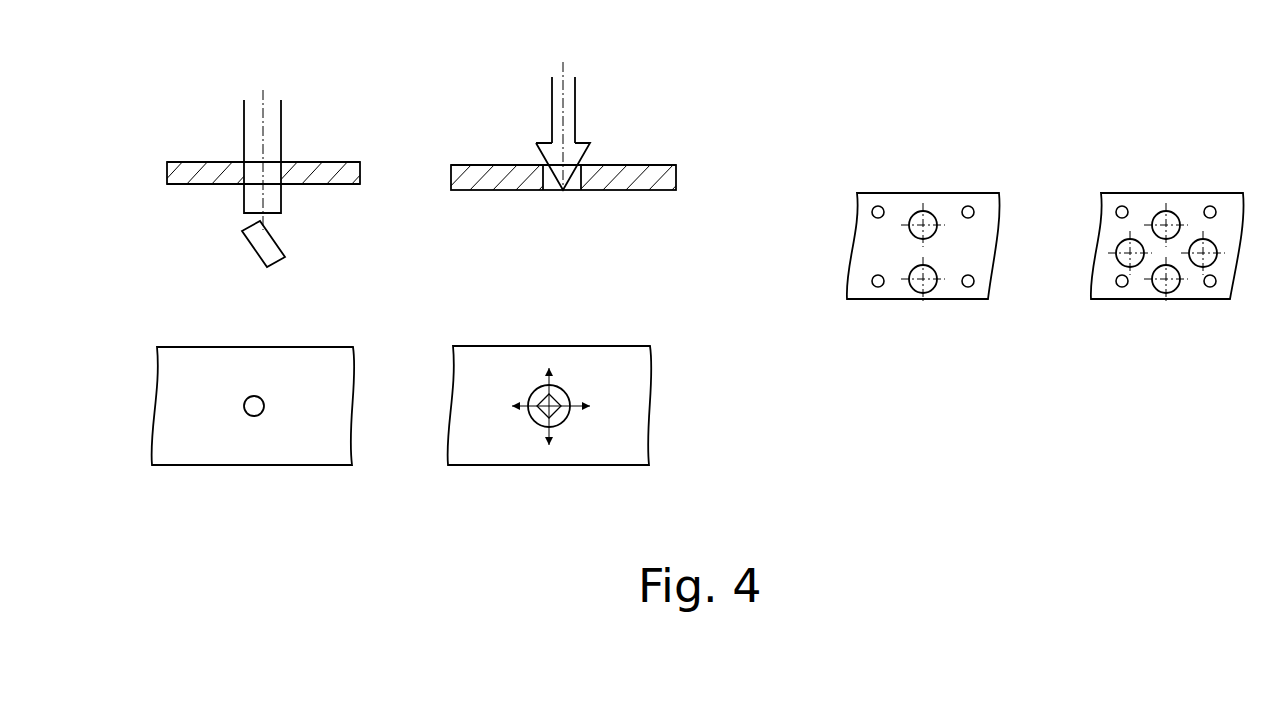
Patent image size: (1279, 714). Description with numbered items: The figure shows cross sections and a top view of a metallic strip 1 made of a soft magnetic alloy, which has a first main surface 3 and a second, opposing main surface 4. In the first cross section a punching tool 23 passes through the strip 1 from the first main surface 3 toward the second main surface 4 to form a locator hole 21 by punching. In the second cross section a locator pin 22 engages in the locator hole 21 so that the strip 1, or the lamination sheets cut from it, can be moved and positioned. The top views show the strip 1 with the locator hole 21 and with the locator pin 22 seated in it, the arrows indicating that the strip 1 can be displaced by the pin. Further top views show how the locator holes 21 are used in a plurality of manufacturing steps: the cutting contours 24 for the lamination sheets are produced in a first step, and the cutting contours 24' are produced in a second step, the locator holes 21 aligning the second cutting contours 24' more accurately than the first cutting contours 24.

The metallic strip 1 is at (196, 160).
The first main surface 3 is at (330, 162).
The second main surface 4 is at (341, 186).
The locator hole 21 is at (247, 185).
The locator pin 22 is at (575, 105).
The punching tool 23 is at (272, 125).
The cutting contours 24 is at (953, 300).
The cutting contours 24' is at (1166, 289).